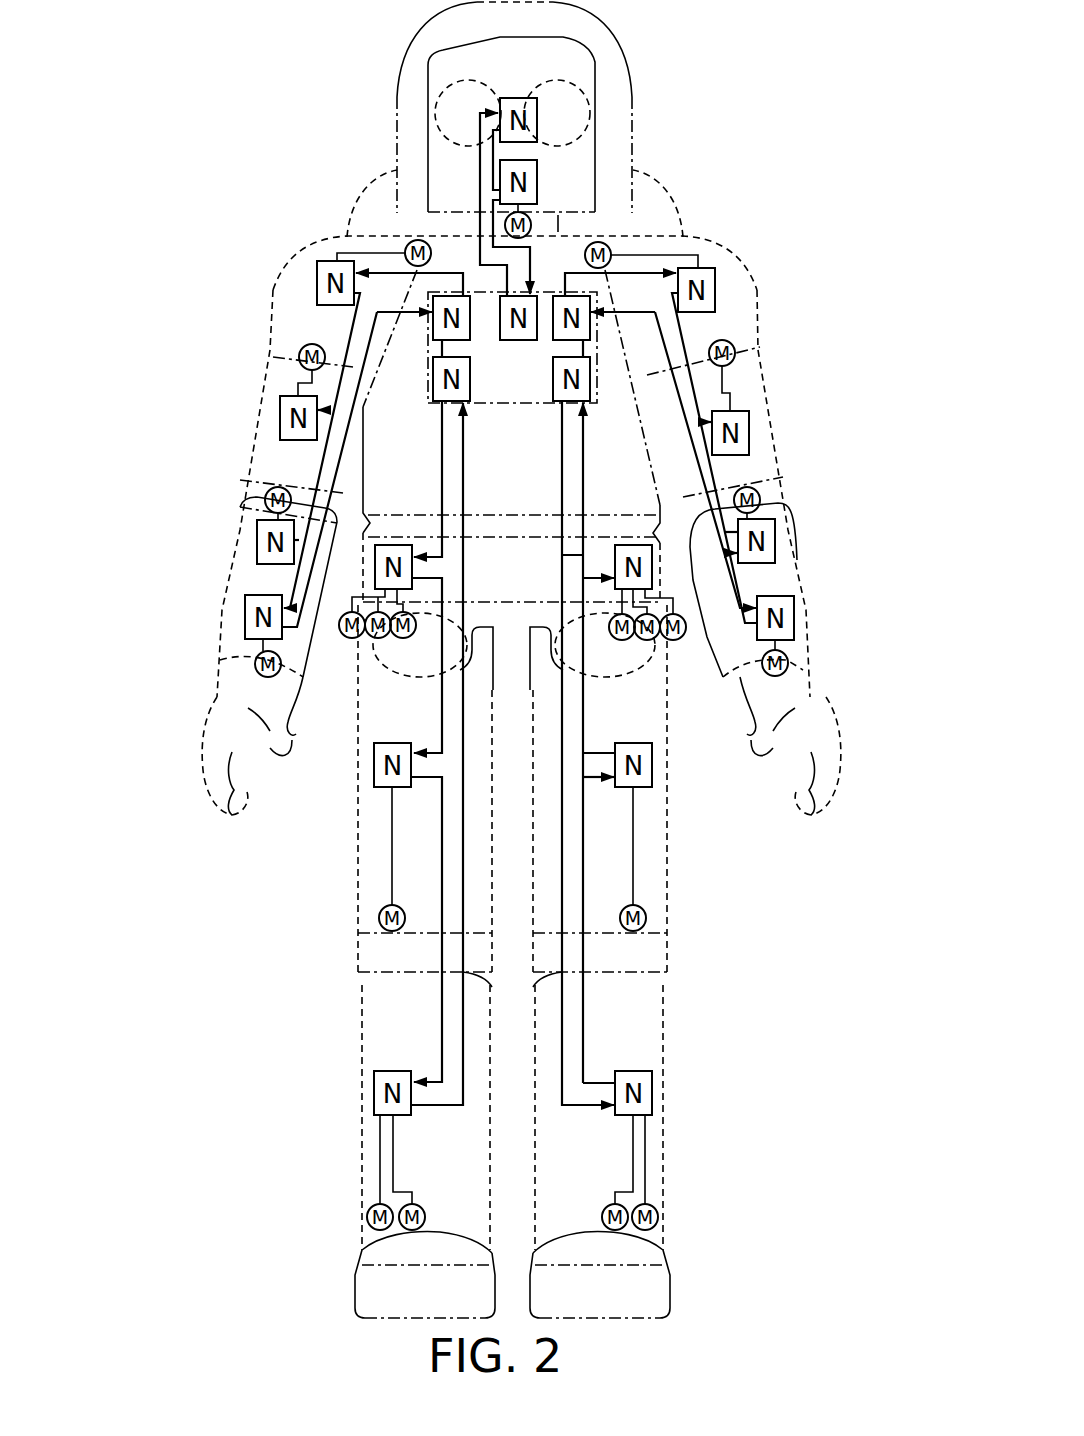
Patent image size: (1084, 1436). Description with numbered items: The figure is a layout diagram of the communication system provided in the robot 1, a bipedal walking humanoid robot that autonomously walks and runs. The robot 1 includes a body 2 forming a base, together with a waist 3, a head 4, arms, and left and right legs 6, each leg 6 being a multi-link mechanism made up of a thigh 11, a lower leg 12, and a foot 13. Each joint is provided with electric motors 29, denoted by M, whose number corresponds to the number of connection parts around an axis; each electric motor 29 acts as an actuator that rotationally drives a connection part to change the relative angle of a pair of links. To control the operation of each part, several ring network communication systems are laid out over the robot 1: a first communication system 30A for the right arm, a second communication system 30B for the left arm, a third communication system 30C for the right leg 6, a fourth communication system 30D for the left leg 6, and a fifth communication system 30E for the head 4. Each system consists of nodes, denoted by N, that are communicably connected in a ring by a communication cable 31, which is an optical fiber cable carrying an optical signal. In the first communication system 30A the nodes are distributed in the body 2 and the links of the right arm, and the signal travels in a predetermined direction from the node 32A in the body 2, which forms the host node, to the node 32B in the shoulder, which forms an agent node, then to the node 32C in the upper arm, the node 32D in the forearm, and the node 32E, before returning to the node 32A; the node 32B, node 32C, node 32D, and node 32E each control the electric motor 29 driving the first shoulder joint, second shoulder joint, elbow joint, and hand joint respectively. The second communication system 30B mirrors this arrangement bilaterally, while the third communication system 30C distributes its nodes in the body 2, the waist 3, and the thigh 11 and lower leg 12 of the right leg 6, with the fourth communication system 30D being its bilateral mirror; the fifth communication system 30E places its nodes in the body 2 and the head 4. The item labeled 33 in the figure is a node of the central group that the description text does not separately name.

The robot 1 is at (240, 118).
The body 2 is at (553, 253).
The waist 3 is at (660, 585).
The head 4 is at (617, 63).
The leg 6 is at (262, 1046).
The thigh 11 is at (358, 832).
The lower leg 12 is at (362, 1105).
The foot 13 is at (352, 1285).
The electric motor 29 is at (326, 358).
The first communication system 30A is at (285, 474).
The second communication system 30B is at (760, 466).
The third communication system 30C is at (388, 1018).
The fourth communication system 30D is at (648, 1016).
The fifth communication system 30E is at (440, 160).
The communication cable 31 is at (430, 207).
The node 32A is at (432, 330).
The node 32B is at (315, 268).
The node 32C is at (280, 422).
The node 32D is at (256, 542).
The node 32E is at (245, 620).
The central node 33 is at (597, 393).